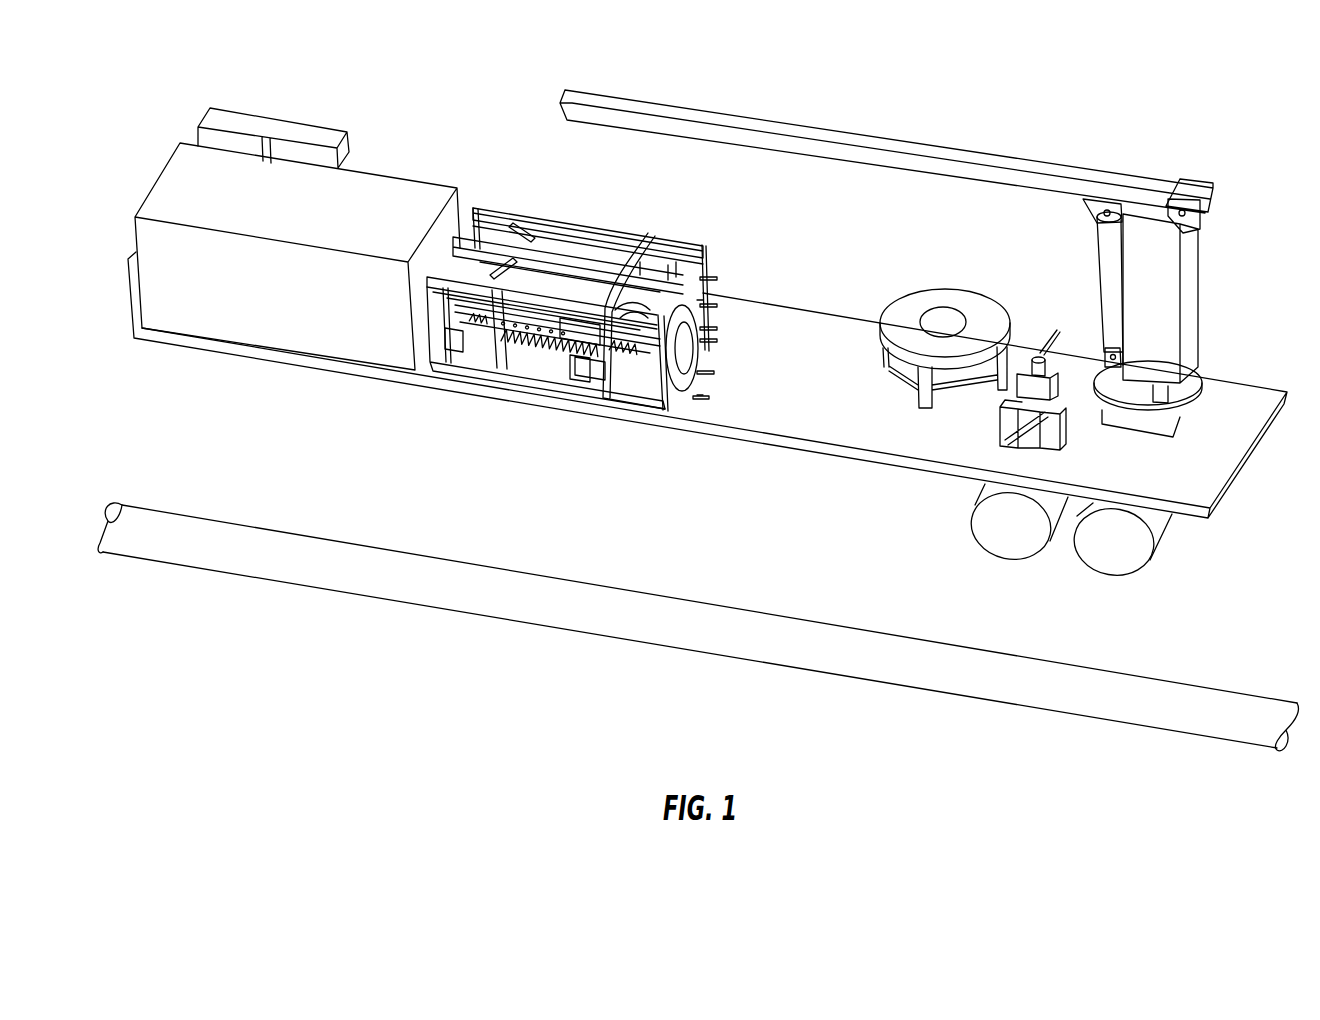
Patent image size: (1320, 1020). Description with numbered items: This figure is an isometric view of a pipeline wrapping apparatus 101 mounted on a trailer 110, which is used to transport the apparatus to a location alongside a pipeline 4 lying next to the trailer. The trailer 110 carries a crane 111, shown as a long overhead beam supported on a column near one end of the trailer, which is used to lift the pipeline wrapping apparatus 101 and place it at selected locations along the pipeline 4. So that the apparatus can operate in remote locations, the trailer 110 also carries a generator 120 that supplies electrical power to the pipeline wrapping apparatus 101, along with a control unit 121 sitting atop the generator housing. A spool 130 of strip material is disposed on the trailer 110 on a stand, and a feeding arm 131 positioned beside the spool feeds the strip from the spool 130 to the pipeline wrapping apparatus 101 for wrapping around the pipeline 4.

The pipeline 4 is at (205, 560).
The pipeline wrapping apparatus 101 is at (503, 203).
The trailer 110 is at (1243, 380).
The crane 111 is at (912, 140).
The generator 120 is at (390, 188).
The control unit 121 is at (305, 132).
The spool 130 is at (956, 280).
The feeding arm 131 is at (990, 433).